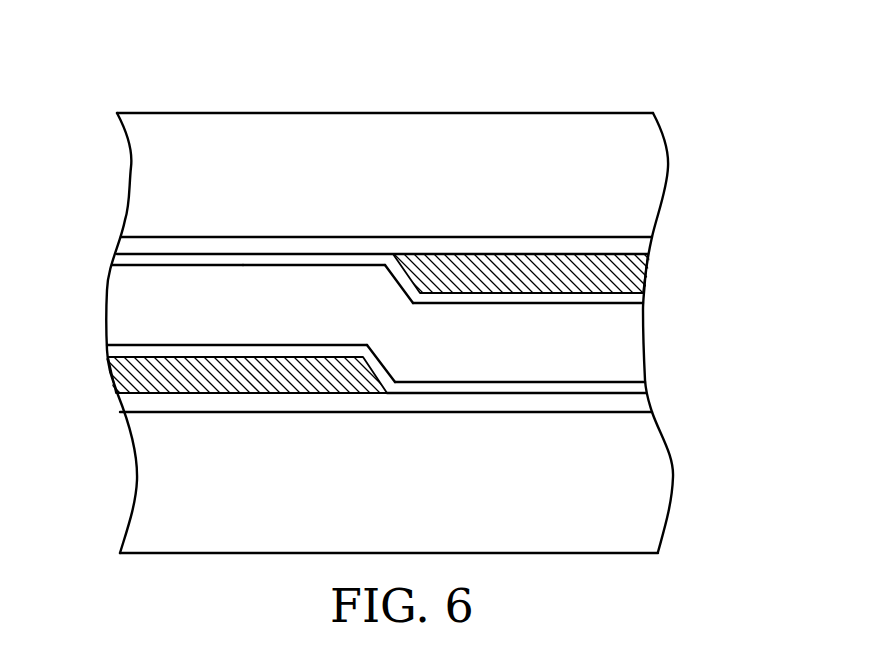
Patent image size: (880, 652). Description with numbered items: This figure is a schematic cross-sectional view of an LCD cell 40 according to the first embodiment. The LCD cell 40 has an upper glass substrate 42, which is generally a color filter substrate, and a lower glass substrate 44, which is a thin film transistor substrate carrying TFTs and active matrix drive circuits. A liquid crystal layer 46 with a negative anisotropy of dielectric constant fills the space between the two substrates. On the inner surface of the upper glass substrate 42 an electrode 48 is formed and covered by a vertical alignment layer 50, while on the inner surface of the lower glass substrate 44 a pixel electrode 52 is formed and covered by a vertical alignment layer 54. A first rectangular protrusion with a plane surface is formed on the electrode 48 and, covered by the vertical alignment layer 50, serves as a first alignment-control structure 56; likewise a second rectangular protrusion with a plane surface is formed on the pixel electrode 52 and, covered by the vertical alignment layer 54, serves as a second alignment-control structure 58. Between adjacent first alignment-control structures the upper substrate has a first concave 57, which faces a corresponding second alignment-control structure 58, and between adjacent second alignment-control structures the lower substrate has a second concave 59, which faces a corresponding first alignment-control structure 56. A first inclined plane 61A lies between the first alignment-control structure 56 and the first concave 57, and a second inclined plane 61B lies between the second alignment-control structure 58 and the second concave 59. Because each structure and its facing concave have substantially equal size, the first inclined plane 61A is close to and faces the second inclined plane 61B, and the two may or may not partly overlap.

The LCD cell 40 is at (629, 58).
The upper glass substrate 42 is at (628, 153).
The lower glass substrate 44 is at (630, 472).
The liquid crystal layer 46 is at (630, 342).
The electrode 48 is at (628, 237).
The vertical alignment layer 50 is at (628, 296).
The pixel electrode 52 is at (652, 403).
The vertical alignment layer 54 is at (630, 385).
The first alignment-control structure 56 is at (633, 268).
The first concave 57 is at (243, 265).
The second alignment-control structure 58 is at (143, 378).
The second concave 59 is at (495, 382).
The first inclined plane 61A is at (395, 280).
The second inclined plane 61B is at (388, 356).